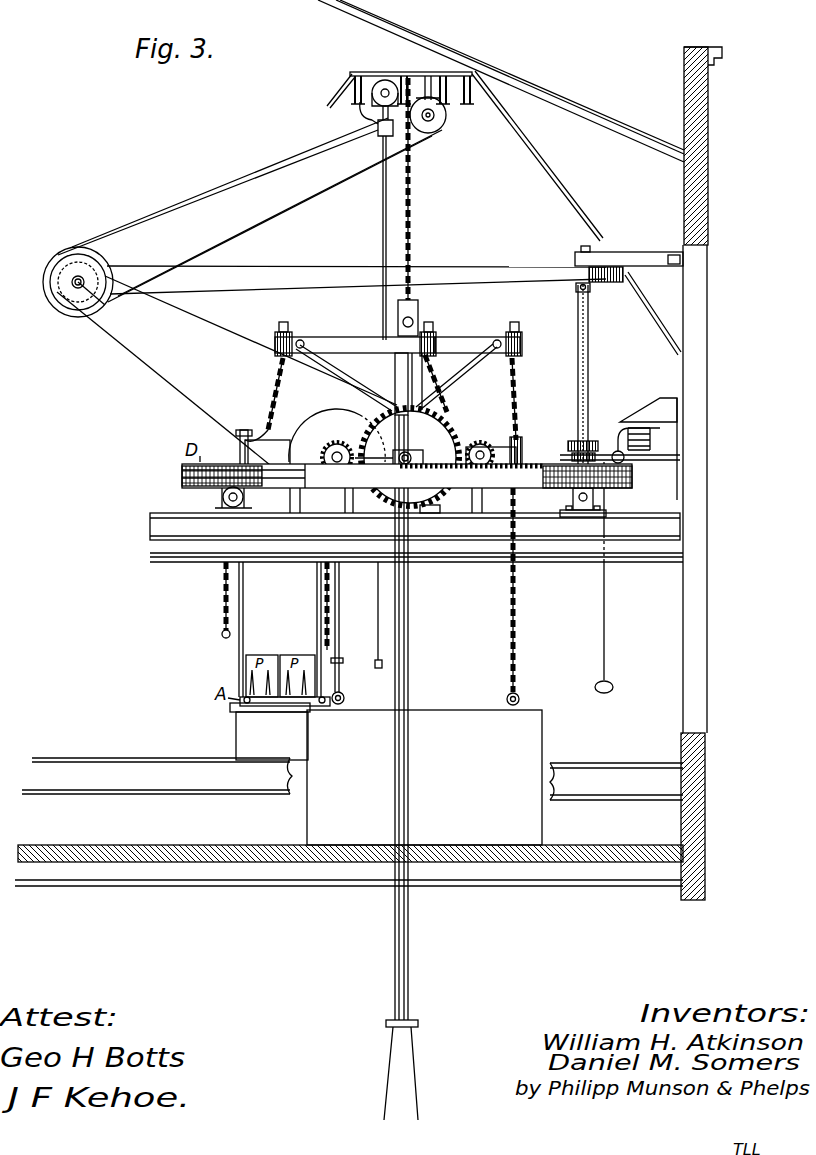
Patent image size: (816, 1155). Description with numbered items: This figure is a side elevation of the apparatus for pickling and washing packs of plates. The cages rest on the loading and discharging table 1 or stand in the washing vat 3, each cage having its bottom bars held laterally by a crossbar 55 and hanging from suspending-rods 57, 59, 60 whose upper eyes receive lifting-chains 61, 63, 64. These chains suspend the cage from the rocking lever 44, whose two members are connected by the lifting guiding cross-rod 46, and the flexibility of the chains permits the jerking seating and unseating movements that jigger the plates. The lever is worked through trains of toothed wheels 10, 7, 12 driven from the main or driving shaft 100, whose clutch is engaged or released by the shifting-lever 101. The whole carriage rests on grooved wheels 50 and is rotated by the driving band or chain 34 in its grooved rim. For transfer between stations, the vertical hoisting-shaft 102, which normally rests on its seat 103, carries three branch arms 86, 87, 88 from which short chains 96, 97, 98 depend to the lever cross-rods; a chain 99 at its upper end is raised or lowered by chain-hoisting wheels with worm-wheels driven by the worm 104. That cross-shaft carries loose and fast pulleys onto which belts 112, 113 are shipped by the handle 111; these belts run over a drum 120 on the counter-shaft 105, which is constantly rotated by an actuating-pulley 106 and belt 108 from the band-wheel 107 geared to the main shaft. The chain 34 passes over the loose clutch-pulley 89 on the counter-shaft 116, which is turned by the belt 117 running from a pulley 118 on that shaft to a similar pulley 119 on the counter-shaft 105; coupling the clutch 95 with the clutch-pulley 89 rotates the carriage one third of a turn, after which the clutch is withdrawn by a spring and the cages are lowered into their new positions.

The loading and discharging table 1 is at (270, 731).
The washing bath or vat 3 is at (424, 777).
The toothed wheel 7 is at (445, 440).
The toothed wheel 10 is at (325, 444).
The toothed wheel 12 is at (478, 440).
The driving band or chain 34 is at (182, 474).
The rocking lever 44 is at (485, 445).
The lifting guiding cross-rod 46 is at (267, 452).
The grooved wheel 50 is at (223, 497).
The crossbar 55 is at (285, 702).
The suspending-rod 57 is at (348, 702).
The suspending-rod 59 is at (239, 645).
The suspending-rod 60 is at (317, 626).
The lifting-chain 61 is at (340, 624).
The lifting-chain 63 is at (223, 602).
The lifting-chain 64 is at (323, 594).
The branch arm 86 is at (355, 366).
The branch arm 87 is at (483, 345).
The branch arm 88 is at (445, 345).
The loose clutch-pulley 89 is at (566, 462).
The clutch 95 is at (590, 445).
The short chain 96 is at (268, 395).
The short chain 97 is at (520, 380).
The short chain 98 is at (447, 400).
The chain 99 is at (412, 214).
The main or driving shaft 100 is at (390, 455).
The shifting-lever 101 is at (377, 584).
The vertical hoisting-shaft 102 is at (394, 362).
The seat 103 is at (422, 1040).
The worm 104 is at (446, 120).
The counter-shaft 105 is at (50, 281).
The actuating-pulley 106 is at (58, 292).
The band-wheel 107 is at (337, 435).
The belt 108 is at (238, 333).
The handle 111 is at (381, 312).
The belt 112 is at (232, 226).
The belt 113 is at (240, 176).
The counter-shaft 116 is at (585, 392).
The belt 117 is at (336, 268).
The pulley 118 is at (570, 266).
The pulley 119 is at (72, 305).
The drum 120 is at (55, 264).